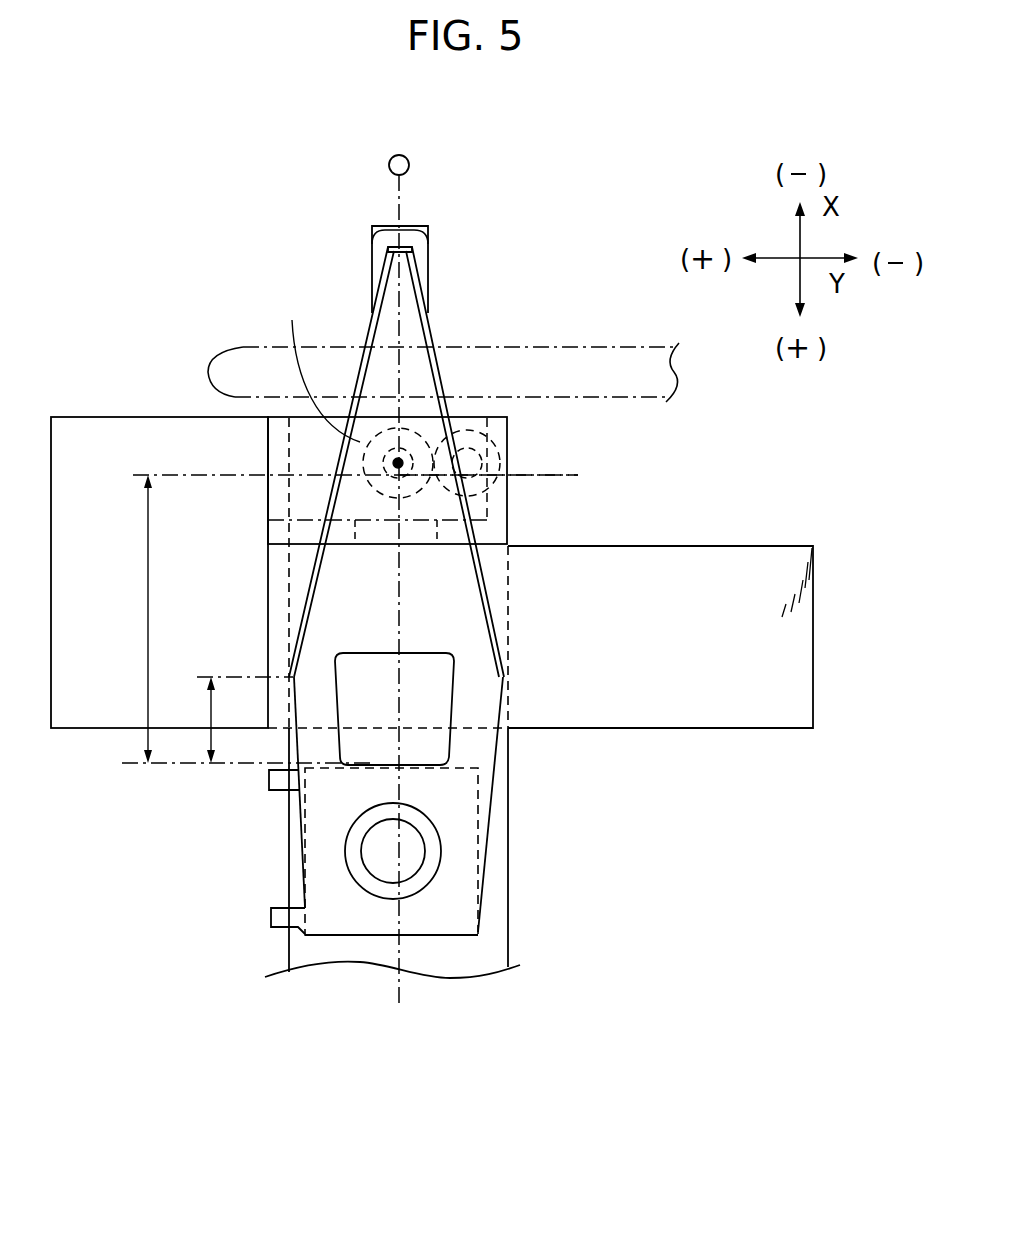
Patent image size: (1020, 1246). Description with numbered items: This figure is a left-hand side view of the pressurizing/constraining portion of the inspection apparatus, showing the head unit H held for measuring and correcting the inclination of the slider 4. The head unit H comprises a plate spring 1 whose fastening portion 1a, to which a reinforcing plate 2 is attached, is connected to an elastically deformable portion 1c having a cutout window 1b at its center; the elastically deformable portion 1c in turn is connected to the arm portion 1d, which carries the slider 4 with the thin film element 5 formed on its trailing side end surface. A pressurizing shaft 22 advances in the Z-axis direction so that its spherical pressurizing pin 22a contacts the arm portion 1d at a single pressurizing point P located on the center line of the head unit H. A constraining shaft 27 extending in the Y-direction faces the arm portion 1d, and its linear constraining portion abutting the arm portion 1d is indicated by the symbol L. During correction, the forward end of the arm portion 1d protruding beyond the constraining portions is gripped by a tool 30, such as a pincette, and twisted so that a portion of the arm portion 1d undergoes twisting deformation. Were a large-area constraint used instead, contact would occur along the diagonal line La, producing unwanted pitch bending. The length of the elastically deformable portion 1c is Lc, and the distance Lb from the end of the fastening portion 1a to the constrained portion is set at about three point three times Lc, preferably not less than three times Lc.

The plate spring 1 is at (305, 708).
The fastening portion 1a is at (493, 812).
The cutout window 1b is at (446, 684).
The elastically deformable portion 1c is at (480, 715).
The arm portion 1d is at (347, 503).
The reinforcing plate 2 is at (465, 878).
The slider 4 is at (428, 237).
The thin film element 5 is at (420, 223).
The pressurizing shaft 22 is at (484, 465).
The pressurizing pin 22a is at (492, 443).
The constraining shaft 27 is at (813, 672).
The tool 30 is at (637, 346).
The pressurizing point P is at (400, 460).
The linear constraining portion L is at (400, 480).
The diagonal line La is at (318, 365).
The distance Lb is at (242, 619).
The length Lc is at (235, 720).
The head unit H is at (492, 583).